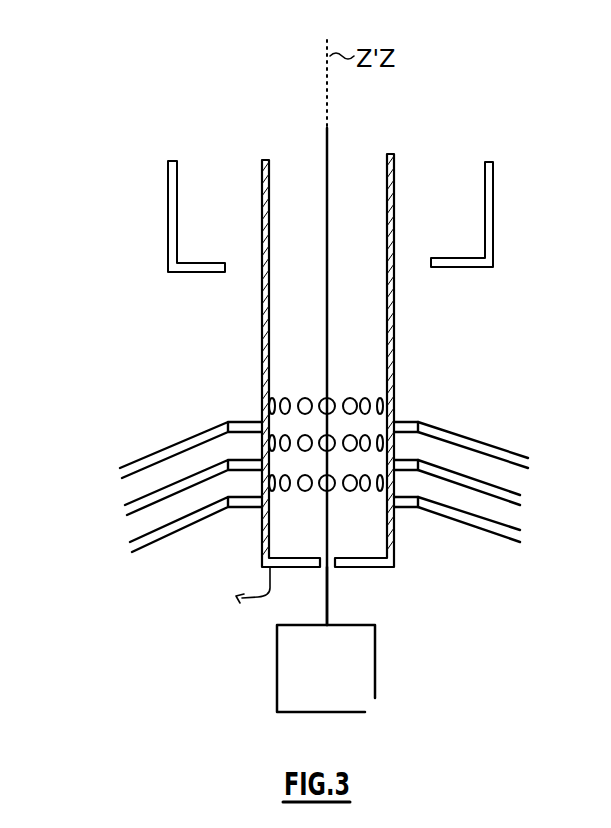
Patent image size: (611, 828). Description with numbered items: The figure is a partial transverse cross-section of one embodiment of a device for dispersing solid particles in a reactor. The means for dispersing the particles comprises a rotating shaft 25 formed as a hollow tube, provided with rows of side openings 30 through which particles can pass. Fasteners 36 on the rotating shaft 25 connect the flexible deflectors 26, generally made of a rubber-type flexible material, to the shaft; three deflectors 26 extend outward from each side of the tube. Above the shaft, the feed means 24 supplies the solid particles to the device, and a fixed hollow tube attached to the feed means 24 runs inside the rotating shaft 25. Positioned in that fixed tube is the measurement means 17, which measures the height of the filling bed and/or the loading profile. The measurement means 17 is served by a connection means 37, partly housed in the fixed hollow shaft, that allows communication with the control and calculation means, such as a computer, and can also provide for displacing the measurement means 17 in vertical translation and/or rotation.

The measurement means 17 is at (347, 693).
The feed means 24 is at (465, 262).
The rotating shaft 25 is at (395, 335).
The flexible deflectors 26 is at (462, 515).
The side openings 30 is at (350, 398).
The fasteners 36 is at (408, 420).
The connection means 37 is at (330, 588).